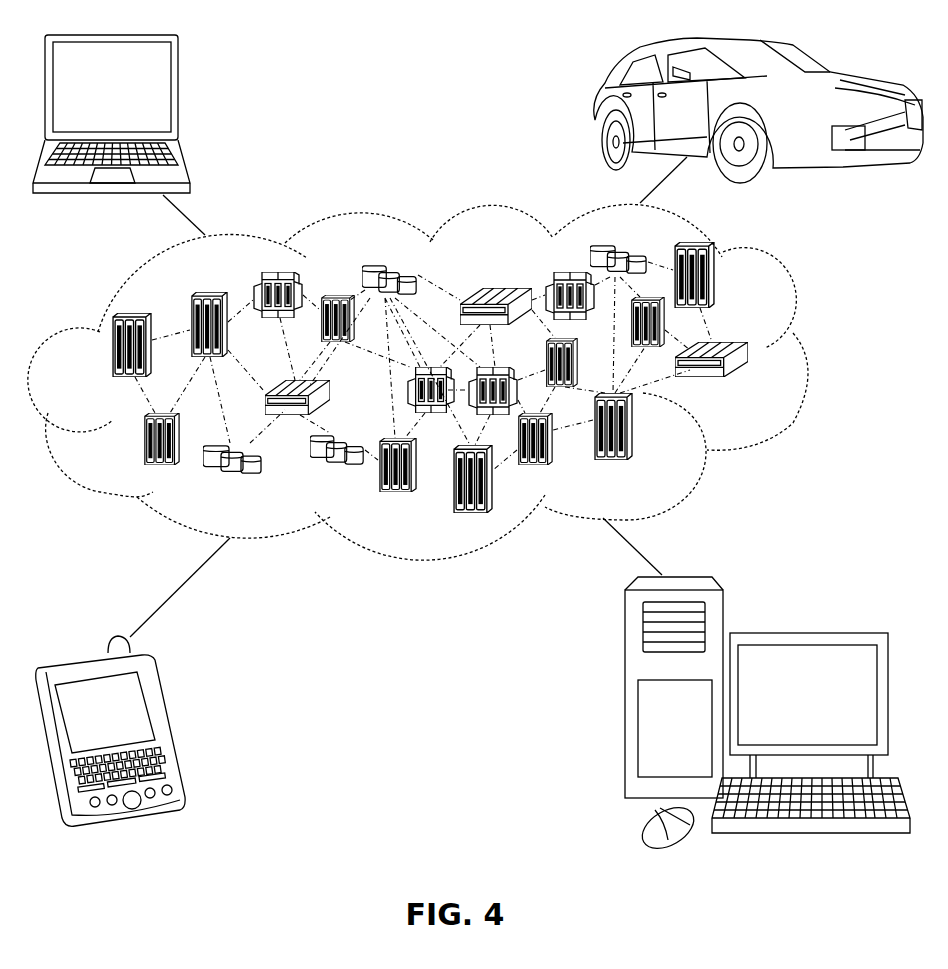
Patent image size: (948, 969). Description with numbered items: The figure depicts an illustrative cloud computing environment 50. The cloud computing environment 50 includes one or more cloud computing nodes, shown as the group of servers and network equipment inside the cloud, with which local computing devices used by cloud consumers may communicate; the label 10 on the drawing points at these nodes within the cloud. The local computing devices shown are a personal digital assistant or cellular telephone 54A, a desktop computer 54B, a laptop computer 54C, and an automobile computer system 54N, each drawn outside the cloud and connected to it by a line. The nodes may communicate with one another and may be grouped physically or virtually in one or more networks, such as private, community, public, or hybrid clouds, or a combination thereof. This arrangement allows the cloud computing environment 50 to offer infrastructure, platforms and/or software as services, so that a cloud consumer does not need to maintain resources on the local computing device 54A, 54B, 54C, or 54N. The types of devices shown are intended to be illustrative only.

The cloud computing nodes 10 is at (752, 386).
The cloud computing environment 50 is at (808, 356).
The personal digital assistant (PDA) or cellular telephone 54A is at (168, 725).
The desktop computer 54B is at (807, 630).
The laptop computer 54C is at (177, 97).
The automobile computer system 54N is at (595, 112).